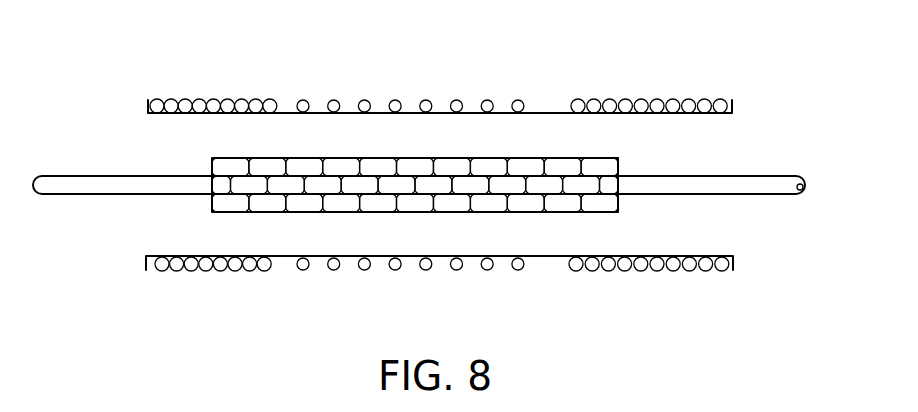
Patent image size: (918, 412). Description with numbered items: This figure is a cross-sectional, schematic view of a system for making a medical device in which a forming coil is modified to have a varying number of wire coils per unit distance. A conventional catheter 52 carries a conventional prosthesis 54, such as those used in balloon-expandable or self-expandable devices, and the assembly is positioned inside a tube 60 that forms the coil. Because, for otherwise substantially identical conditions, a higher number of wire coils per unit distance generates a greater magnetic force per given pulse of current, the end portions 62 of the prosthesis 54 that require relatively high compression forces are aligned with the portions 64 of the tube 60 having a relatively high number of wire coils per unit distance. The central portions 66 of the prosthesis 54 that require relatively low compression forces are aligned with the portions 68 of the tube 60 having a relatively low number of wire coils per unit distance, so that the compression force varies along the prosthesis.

The catheter 52 is at (785, 177).
The prosthesis 54 is at (427, 186).
The tube 60 is at (454, 65).
The portions of prosthesis 62 is at (290, 212).
The portions of tube 64 is at (282, 276).
The portions of prosthesis 66 is at (527, 158).
The portions of tube 68 is at (300, 98).